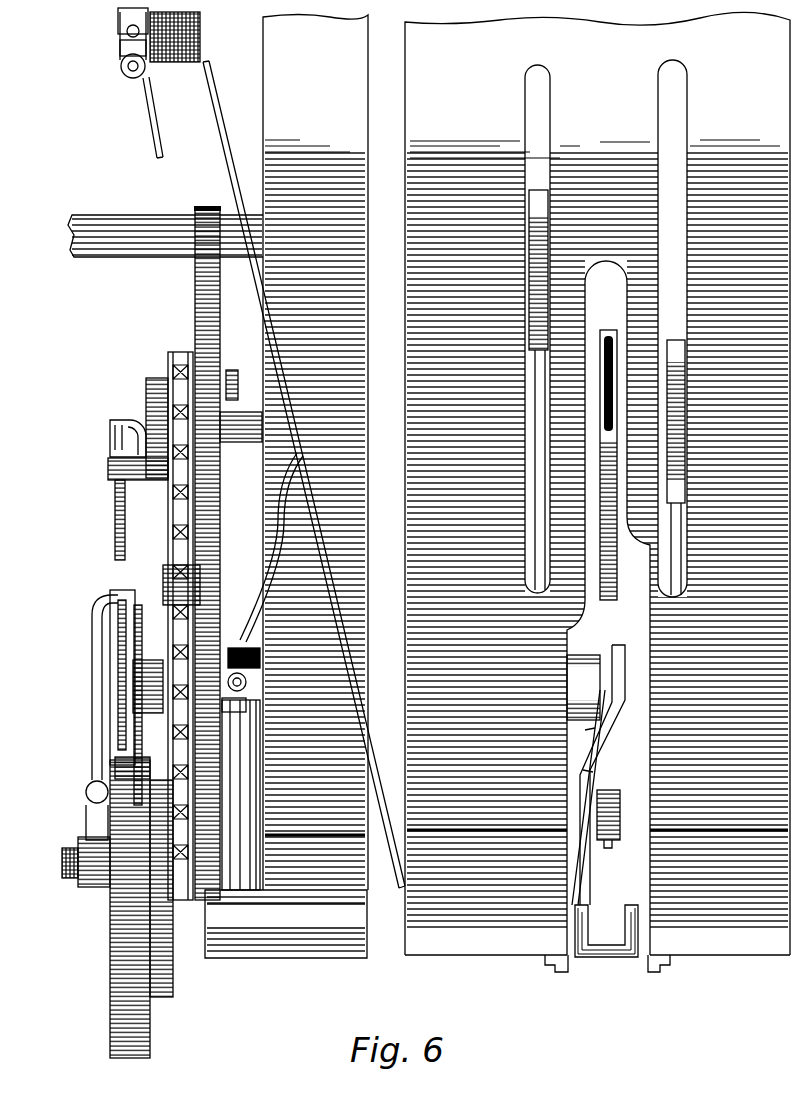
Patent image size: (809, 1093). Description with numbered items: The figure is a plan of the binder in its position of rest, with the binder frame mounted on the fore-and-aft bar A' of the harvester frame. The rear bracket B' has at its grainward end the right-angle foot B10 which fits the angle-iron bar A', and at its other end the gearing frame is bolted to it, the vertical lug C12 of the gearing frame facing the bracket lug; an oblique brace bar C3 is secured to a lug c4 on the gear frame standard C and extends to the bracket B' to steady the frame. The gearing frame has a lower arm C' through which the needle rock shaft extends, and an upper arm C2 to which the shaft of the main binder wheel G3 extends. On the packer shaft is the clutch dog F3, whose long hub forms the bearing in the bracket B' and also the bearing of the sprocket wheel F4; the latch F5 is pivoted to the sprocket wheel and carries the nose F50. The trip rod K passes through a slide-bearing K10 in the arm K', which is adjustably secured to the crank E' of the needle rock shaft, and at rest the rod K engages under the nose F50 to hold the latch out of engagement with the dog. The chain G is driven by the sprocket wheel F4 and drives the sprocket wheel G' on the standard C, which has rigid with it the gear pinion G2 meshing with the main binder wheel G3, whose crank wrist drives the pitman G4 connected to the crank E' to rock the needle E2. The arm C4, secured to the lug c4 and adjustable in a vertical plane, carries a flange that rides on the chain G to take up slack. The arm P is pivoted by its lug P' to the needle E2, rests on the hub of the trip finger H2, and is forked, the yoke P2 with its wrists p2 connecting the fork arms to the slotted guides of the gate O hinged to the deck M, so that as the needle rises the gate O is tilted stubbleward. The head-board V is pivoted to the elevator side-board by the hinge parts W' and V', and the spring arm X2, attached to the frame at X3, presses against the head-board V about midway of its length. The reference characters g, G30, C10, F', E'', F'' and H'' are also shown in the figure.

The hinge part W' is at (109, 39).
The hinge part V' is at (125, 117).
The head-board V is at (295, 474).
The fore-and-aft bar A' is at (165, 251).
The right-angle foot B10 is at (205, 270).
The sprocket wheel F4 is at (168, 355).
The latch F5 is at (148, 386).
The clutch dog F3 is at (115, 425).
The nose of latch F50 is at (110, 466).
The trip rod K is at (87, 520).
The chain G is at (150, 513).
The rear bracket B' is at (127, 534).
The slide-bearing K10 is at (115, 592).
The block C10 is at (175, 578).
The chain-tightening arm C4 is at (200, 640).
The crank E' is at (82, 677).
The arm K' is at (83, 705).
The pitman G4 is at (97, 728).
The gear pinion G2 is at (113, 770).
The shaft end g is at (62, 858).
The main binder wheel G3 is at (130, 907).
The sprocket wheel G' is at (121, 909).
The small gear G30 is at (173, 990).
The gear frame standard C is at (241, 795).
The vertical lug C12 is at (243, 635).
The spring arm X2 is at (277, 590).
The attachment point of spring arm X3 is at (246, 678).
The lug c4 is at (230, 706).
The oblique brace bar C3 is at (236, 385).
The sleeve F' is at (241, 447).
The upper arm of gearing frame C2 is at (286, 924).
The deck M is at (597, 492).
The gate O is at (597, 873).
The tube E'' is at (558, 369).
The tube F'' is at (697, 456).
The needle E2 is at (596, 479).
The lower arm of gearing frame C' is at (583, 687).
The downwardly projecting lug P' is at (644, 775).
The lever H'' is at (543, 797).
The arm P is at (599, 755).
The trip arm or finger H2 is at (620, 812).
The wrists of yoke p2 is at (583, 900).
The yoke P2 is at (608, 960).